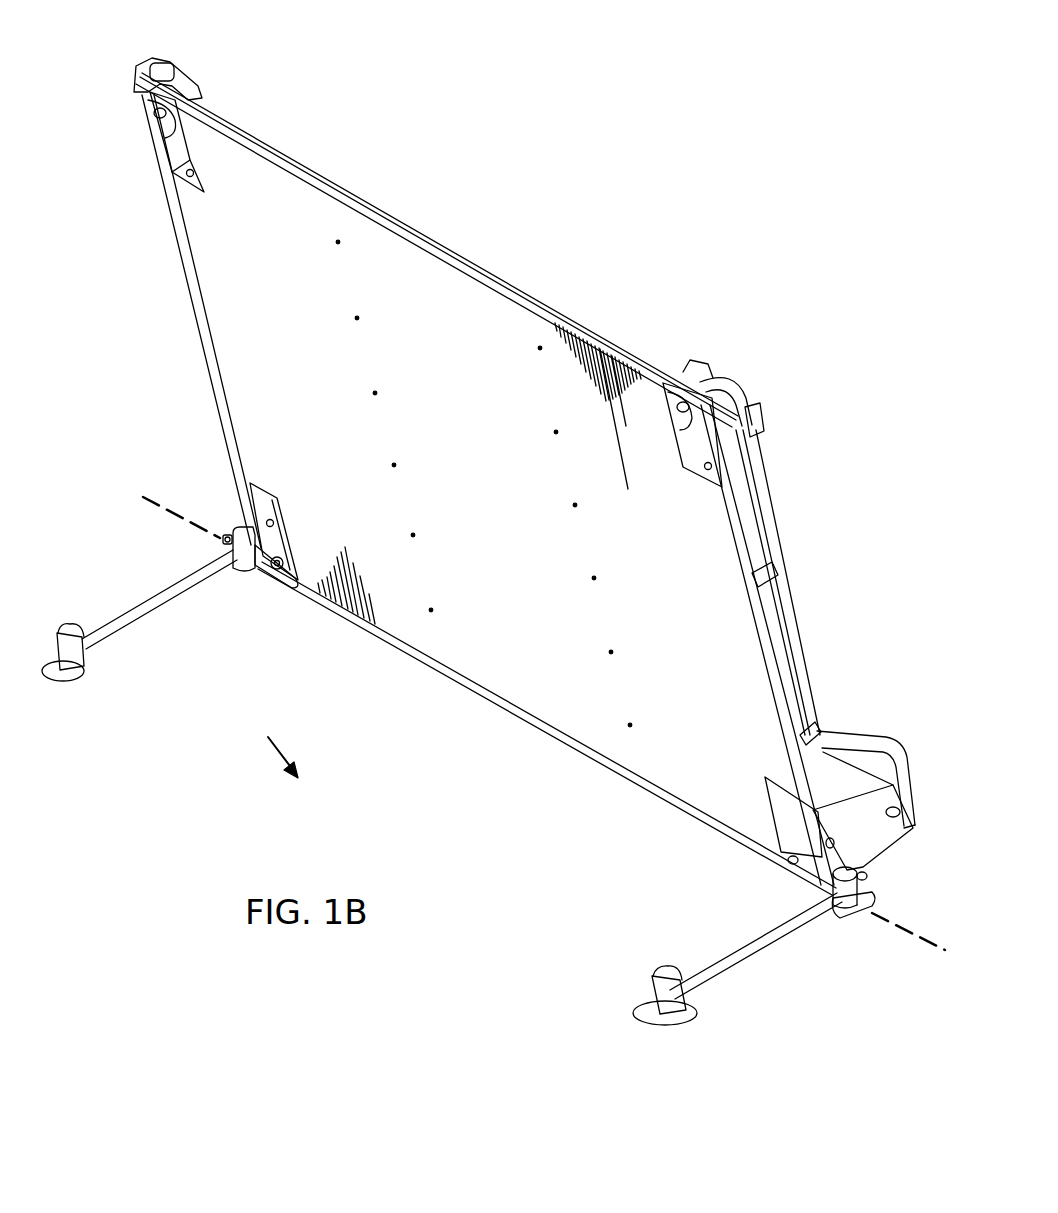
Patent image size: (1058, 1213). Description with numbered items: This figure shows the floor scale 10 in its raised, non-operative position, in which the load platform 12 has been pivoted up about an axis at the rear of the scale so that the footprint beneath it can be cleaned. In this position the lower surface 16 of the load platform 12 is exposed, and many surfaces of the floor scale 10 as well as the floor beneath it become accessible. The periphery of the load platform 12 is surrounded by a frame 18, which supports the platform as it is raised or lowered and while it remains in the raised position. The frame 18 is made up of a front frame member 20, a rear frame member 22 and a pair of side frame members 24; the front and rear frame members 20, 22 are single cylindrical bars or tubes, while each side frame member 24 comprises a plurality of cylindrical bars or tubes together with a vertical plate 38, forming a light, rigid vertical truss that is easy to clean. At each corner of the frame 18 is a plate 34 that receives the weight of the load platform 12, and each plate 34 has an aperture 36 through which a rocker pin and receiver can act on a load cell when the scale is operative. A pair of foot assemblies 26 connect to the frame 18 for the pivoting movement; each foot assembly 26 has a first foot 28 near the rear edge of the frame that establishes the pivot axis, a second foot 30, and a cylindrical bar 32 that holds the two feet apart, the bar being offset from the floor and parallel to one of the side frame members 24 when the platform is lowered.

The floor scale 10 is at (750, 250).
The load platform 12 is at (238, 370).
The lower surface 16 is at (496, 503).
The frame 18 is at (430, 228).
The front frame member 20 is at (578, 320).
The rear frame member 22 is at (542, 736).
The side frame members 24 is at (172, 252).
The foot assemblies 26 is at (138, 634).
The first foot 28 is at (243, 577).
The second foot 30 is at (80, 674).
The cylindrical bar 32 is at (162, 594).
The plate 34 is at (148, 107).
The aperture 36 is at (160, 116).
The vertical plate 38 is at (878, 847).